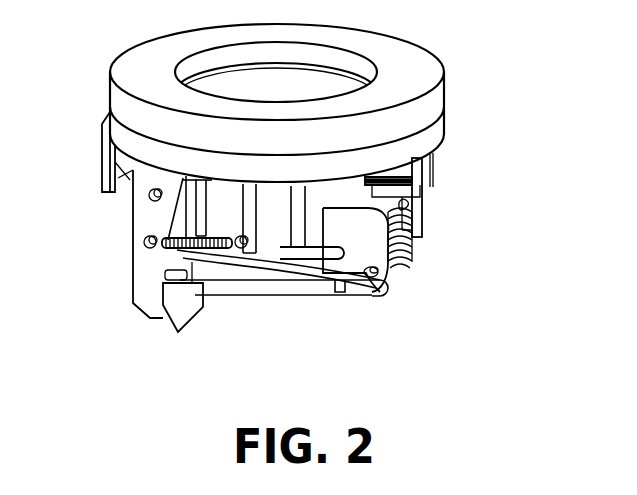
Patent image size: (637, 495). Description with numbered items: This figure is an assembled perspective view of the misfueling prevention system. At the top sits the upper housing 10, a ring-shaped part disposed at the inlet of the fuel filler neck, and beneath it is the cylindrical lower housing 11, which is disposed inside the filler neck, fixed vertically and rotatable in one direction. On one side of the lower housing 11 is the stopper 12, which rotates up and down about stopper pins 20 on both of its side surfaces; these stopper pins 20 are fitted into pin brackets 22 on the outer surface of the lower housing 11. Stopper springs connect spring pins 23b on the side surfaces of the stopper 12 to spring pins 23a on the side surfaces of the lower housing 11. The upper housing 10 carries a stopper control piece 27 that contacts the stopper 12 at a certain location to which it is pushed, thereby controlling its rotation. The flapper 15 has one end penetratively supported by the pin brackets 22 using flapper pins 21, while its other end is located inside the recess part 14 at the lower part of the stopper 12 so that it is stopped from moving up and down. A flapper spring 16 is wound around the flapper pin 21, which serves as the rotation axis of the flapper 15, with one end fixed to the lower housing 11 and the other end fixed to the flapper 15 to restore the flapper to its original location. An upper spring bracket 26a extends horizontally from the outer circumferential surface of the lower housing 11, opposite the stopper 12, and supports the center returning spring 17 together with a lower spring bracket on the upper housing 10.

The upper housing 10 is at (445, 102).
The lower housing 11 is at (275, 232).
The stopper 12 is at (140, 270).
The recess part 14 is at (163, 312).
The flapper 15 is at (298, 275).
The flapper spring 16 is at (412, 248).
The center returning spring 17 is at (432, 174).
The stopper pin 20 is at (150, 198).
The flapper pin 21 is at (357, 282).
The pin bracket 22 is at (383, 278).
The spring pin 23a is at (140, 242).
The spring pin 23b is at (241, 252).
The upper spring bracket 26a is at (432, 185).
The stopper control piece 27 is at (107, 165).